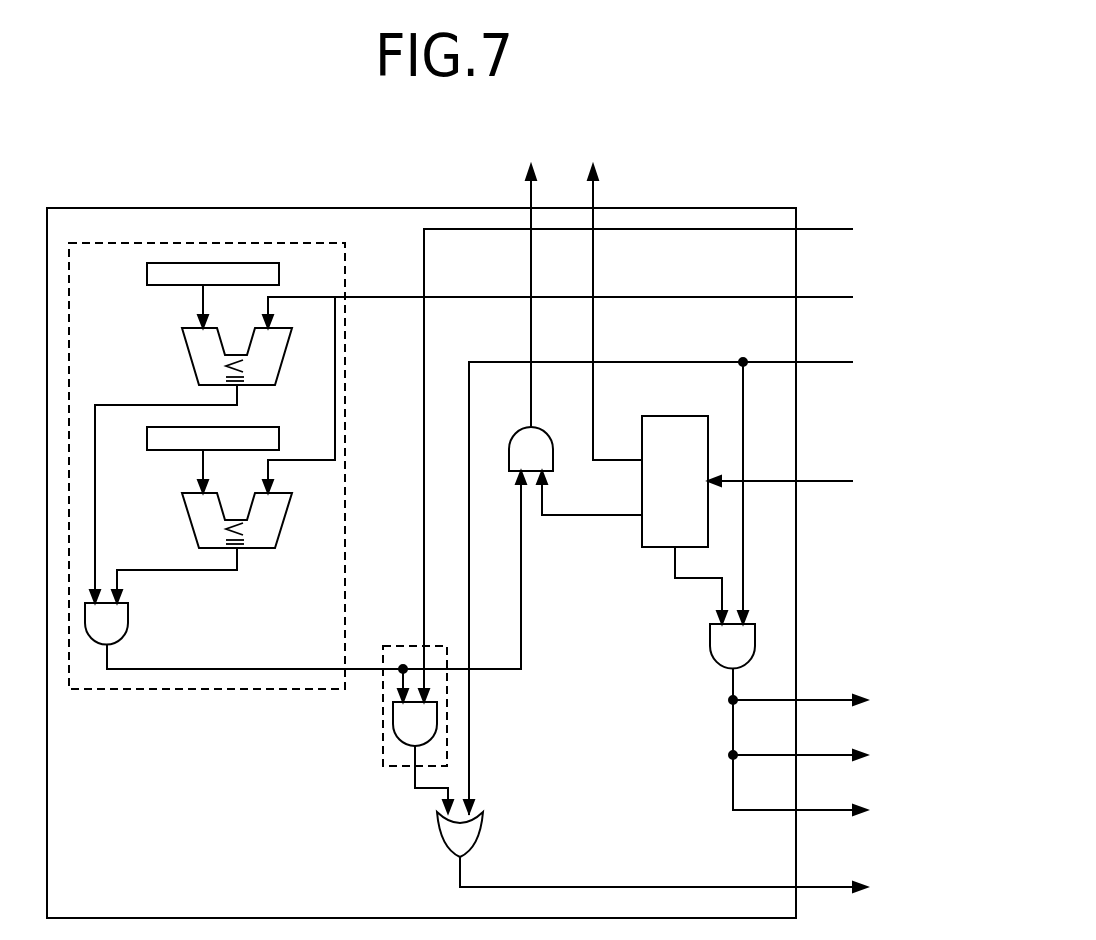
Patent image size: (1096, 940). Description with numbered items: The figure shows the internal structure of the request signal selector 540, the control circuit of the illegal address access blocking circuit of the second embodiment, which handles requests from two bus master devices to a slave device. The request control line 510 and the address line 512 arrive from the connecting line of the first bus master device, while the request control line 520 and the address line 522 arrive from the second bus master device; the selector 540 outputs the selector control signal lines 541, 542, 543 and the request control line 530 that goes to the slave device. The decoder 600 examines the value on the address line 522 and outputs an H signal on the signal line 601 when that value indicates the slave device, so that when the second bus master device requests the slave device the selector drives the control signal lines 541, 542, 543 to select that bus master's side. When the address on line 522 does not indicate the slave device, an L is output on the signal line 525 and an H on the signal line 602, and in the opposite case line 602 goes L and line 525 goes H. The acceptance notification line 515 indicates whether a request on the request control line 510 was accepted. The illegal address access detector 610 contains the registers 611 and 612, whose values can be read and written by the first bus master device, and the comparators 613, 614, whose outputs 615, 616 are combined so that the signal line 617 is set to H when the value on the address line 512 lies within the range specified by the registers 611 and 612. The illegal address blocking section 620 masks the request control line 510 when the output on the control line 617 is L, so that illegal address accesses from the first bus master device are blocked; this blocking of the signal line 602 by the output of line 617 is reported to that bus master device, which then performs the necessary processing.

The request control line 510 is at (818, 228).
The address line 512 is at (818, 296).
The acceptance notification line 515 is at (531, 192).
The request control line 520 is at (818, 361).
The address line 522 is at (818, 480).
The signal line 525 is at (593, 190).
The request control line 530 is at (820, 886).
The request signal selector 540 is at (687, 206).
The selector control signal line 541 is at (818, 699).
The selector control signal line 542 is at (826, 753).
The selector control signal line 543 is at (826, 808).
The decoder 600 is at (658, 548).
The signal line 601 is at (697, 580).
The signal line 602 is at (593, 517).
The illegal address access detector 610 is at (272, 691).
The register 611 is at (147, 276).
The register 612 is at (147, 445).
The comparator 613 is at (182, 362).
The comparator 614 is at (182, 524).
The first comparison result line 615 is at (240, 394).
The second comparison result line 616 is at (240, 557).
The signal line 617 is at (205, 669).
The illegal address blocking section 620 is at (383, 750).